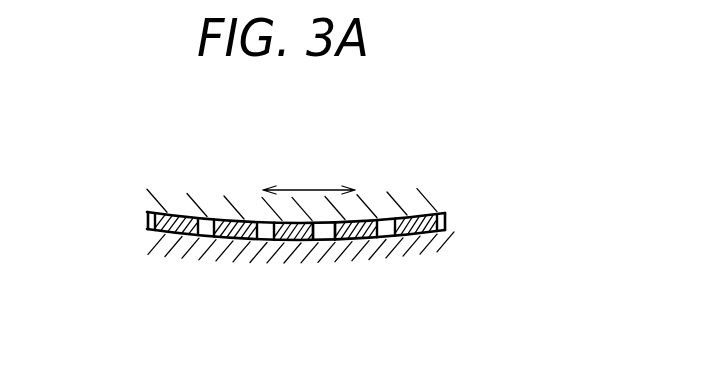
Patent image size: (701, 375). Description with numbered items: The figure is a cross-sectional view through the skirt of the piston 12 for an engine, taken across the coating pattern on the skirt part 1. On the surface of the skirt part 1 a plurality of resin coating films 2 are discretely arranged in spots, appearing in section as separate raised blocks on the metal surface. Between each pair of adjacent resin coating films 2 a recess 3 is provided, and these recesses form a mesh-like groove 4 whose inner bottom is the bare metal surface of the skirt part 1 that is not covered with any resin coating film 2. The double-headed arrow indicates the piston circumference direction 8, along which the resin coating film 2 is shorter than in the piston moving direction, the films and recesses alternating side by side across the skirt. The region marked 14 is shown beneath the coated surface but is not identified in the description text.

The skirt part 1 is at (146, 213).
The resin coating film 2 is at (178, 214).
The recess 3 is at (207, 220).
The mesh-like groove 4 is at (310, 239).
The piston circumference direction 8 is at (308, 190).
The piston 12 is at (412, 198).
The base substrate 14 is at (228, 257).